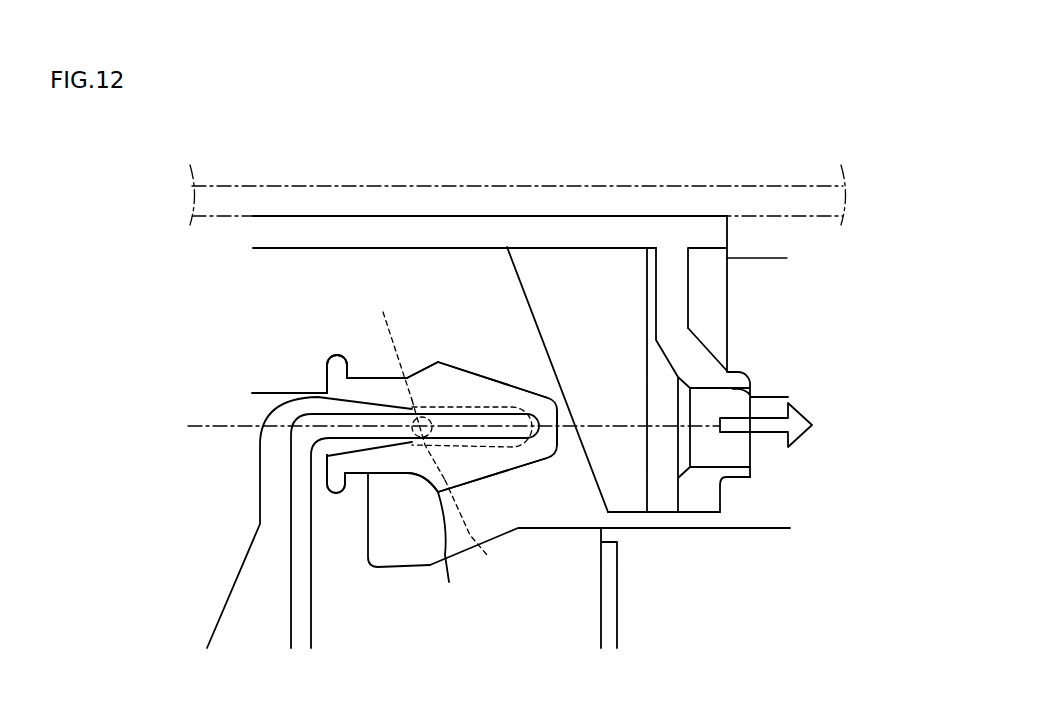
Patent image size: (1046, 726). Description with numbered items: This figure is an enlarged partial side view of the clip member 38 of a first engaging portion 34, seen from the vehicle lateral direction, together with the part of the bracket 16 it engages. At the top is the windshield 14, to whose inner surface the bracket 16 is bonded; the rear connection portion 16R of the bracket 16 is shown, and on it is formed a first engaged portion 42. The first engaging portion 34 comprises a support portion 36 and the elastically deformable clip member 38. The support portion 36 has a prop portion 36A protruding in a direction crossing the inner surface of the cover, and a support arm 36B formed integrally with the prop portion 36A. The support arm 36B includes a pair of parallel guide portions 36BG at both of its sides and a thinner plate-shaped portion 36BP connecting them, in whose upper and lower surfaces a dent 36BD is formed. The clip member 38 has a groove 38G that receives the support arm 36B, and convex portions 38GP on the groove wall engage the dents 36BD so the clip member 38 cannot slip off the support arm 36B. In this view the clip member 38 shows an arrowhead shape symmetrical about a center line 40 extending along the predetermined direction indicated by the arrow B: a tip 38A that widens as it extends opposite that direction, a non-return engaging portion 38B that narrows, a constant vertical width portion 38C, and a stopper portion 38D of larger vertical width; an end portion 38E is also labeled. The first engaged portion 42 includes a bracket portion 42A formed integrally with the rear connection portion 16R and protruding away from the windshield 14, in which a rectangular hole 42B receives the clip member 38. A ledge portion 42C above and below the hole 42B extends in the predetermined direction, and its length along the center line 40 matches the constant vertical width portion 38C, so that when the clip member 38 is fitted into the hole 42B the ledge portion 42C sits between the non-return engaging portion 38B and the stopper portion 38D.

The windshield 14 is at (748, 185).
The bracket 16 is at (457, 212).
The rear connection portion 16R is at (677, 232).
The first engaging portion 34 is at (276, 331).
The support portion 36 is at (283, 512).
The prop portion 36A is at (312, 618).
The support arm 36B is at (327, 455).
The guide portion 36BG is at (500, 408).
The plate-shaped portion 36BP is at (481, 438).
The dent 36BD is at (496, 530).
The clip member 38 is at (519, 382).
The tip 38A is at (503, 377).
The non-return engaging portion 38B is at (423, 367).
The constant vertical width portion 38C is at (365, 378).
The stopper portion 38D is at (327, 372).
The clip end portion 38E is at (440, 360).
The groove 38G is at (538, 430).
The convex portion 38GP is at (390, 362).
The center line 40 is at (198, 425).
The first engaged portion 42 is at (741, 363).
The bracket portion 42A is at (695, 333).
The hole 42B is at (750, 388).
The ledge portion 42C is at (752, 481).
The arrow B is at (812, 425).